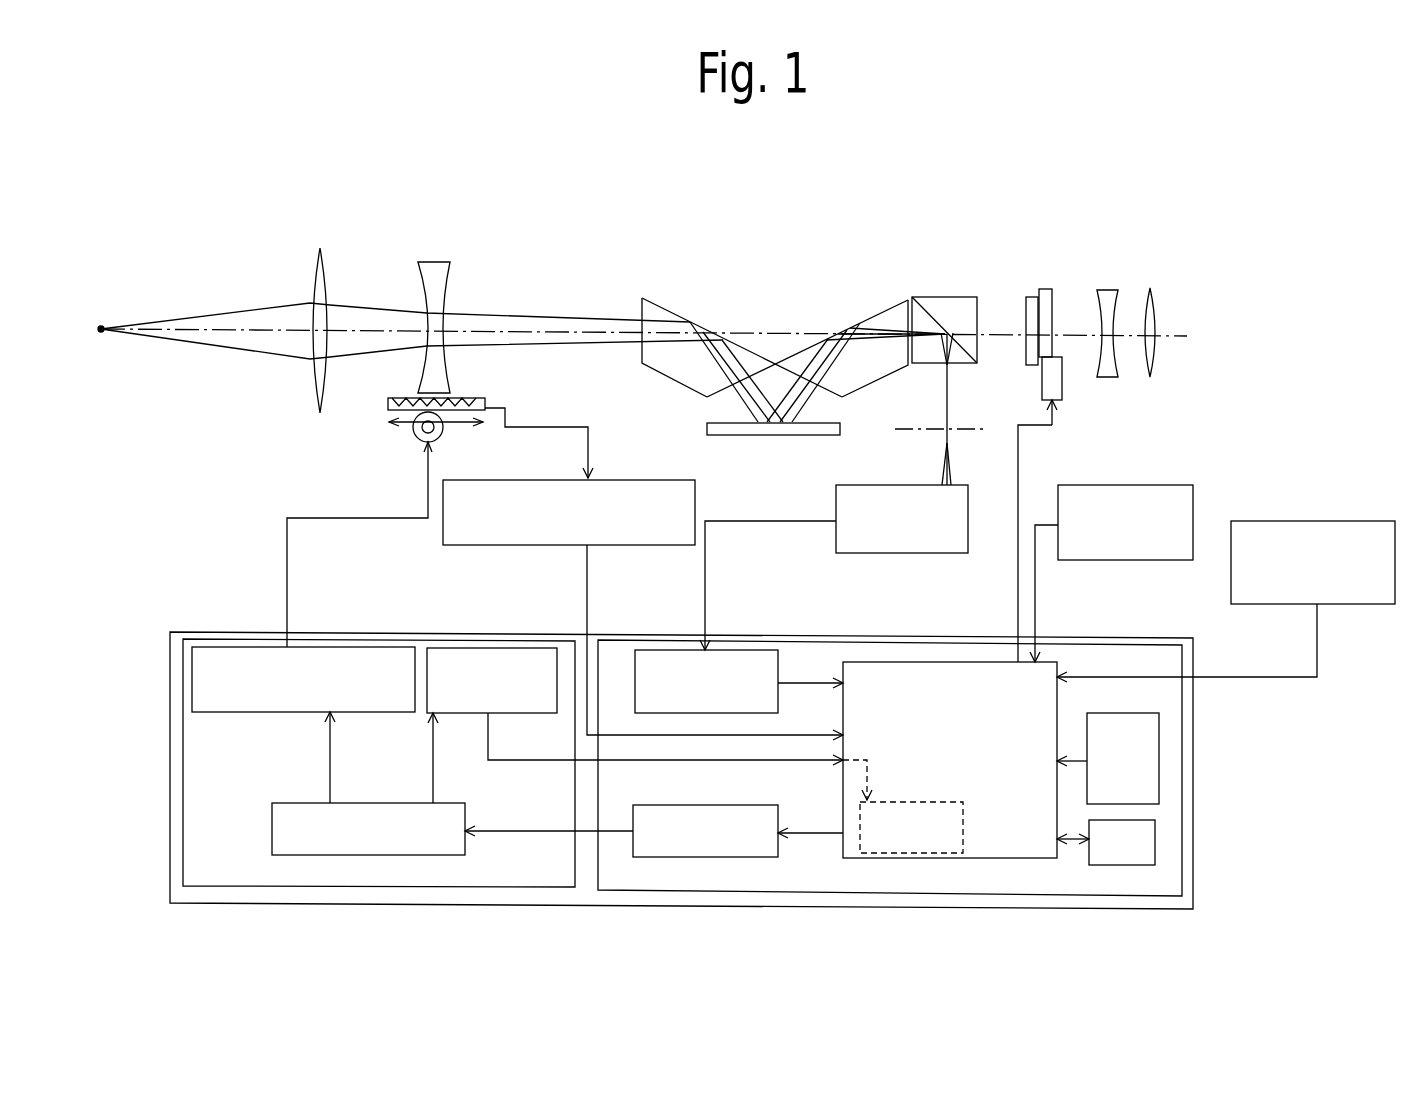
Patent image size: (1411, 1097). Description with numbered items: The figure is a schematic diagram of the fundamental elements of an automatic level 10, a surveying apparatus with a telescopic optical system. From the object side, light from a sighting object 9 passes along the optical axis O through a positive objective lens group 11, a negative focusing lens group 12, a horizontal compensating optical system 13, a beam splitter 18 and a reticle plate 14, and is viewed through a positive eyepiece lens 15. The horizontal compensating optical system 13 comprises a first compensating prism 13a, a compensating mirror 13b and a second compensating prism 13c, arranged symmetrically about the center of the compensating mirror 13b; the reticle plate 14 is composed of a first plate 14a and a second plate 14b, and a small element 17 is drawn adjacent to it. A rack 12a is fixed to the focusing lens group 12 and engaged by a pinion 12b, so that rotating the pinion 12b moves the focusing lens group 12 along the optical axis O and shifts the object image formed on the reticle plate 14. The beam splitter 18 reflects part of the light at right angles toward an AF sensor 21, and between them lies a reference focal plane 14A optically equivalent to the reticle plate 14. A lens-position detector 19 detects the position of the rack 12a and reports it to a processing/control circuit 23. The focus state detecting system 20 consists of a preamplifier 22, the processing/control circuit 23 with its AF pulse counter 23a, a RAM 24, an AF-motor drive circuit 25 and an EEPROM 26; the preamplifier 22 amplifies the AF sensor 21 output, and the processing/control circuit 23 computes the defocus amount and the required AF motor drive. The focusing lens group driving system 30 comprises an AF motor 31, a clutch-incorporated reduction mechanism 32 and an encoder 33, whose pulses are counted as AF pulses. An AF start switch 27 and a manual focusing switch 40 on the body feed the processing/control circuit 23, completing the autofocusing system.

The automatic level 10 is at (775, 165).
The object 9 is at (103, 327).
The optical axis O is at (518, 328).
The objective lens group 11 is at (320, 414).
The focusing lens group 12 is at (438, 262).
The rack 12a is at (485, 405).
The pinion 12b is at (440, 438).
The horizontal compensating optical system 13 is at (793, 349).
The first compensating prism 13a is at (658, 298).
The compensating mirror 13b is at (743, 435).
The second compensating prism 13c is at (873, 312).
The beam splitter 18 is at (947, 307).
The reticle plate 14 is at (1049, 281).
The first plate 14a is at (1033, 297).
The second plate 14b is at (1050, 290).
The reference focal plane 14A is at (970, 428).
The eyepiece lens 15 is at (1158, 283).
The filter drive actuator 17 is at (1053, 388).
The lens-position detector 19 is at (628, 480).
The AF sensor 21 is at (853, 485).
The AF start switch 27 is at (1098, 484).
The focusing switch 40 is at (1311, 521).
The focusing lens group driving system 30 is at (482, 638).
The focus state detecting system 20 is at (627, 640).
The preamplifier 22 is at (635, 681).
The processing/control circuit 23 is at (983, 857).
The AF pulse counter 23a is at (883, 855).
The RAM 24 is at (1152, 841).
The AF-motor drive circuit 25 is at (633, 812).
The EEPROM 26 is at (1152, 797).
The AF motor 31 is at (275, 812).
The clutch-incorporated reduction mechanism 32 is at (233, 712).
The encoder 33 is at (427, 702).